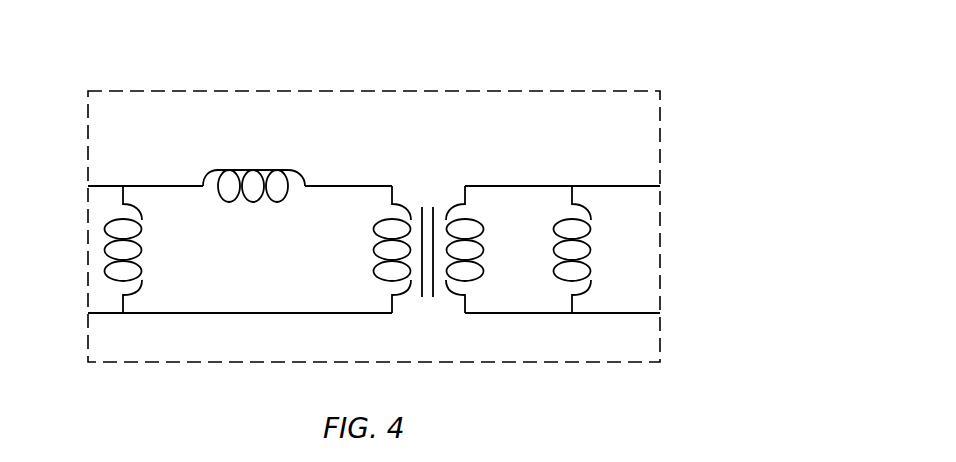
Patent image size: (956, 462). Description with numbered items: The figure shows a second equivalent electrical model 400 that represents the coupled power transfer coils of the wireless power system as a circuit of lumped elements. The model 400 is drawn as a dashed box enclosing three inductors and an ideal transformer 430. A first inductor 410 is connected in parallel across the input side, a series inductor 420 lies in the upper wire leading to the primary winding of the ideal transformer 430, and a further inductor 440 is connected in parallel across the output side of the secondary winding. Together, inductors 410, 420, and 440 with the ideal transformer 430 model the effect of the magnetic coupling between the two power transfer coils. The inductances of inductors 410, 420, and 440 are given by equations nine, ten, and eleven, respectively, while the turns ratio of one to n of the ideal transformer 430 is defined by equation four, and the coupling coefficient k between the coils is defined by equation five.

The second equivalent electrical model 400 is at (522, 91).
The inductor 410 is at (88, 282).
The inductor 420 is at (242, 145).
The ideal transformer 430 is at (387, 153).
The inductor 440 is at (662, 222).